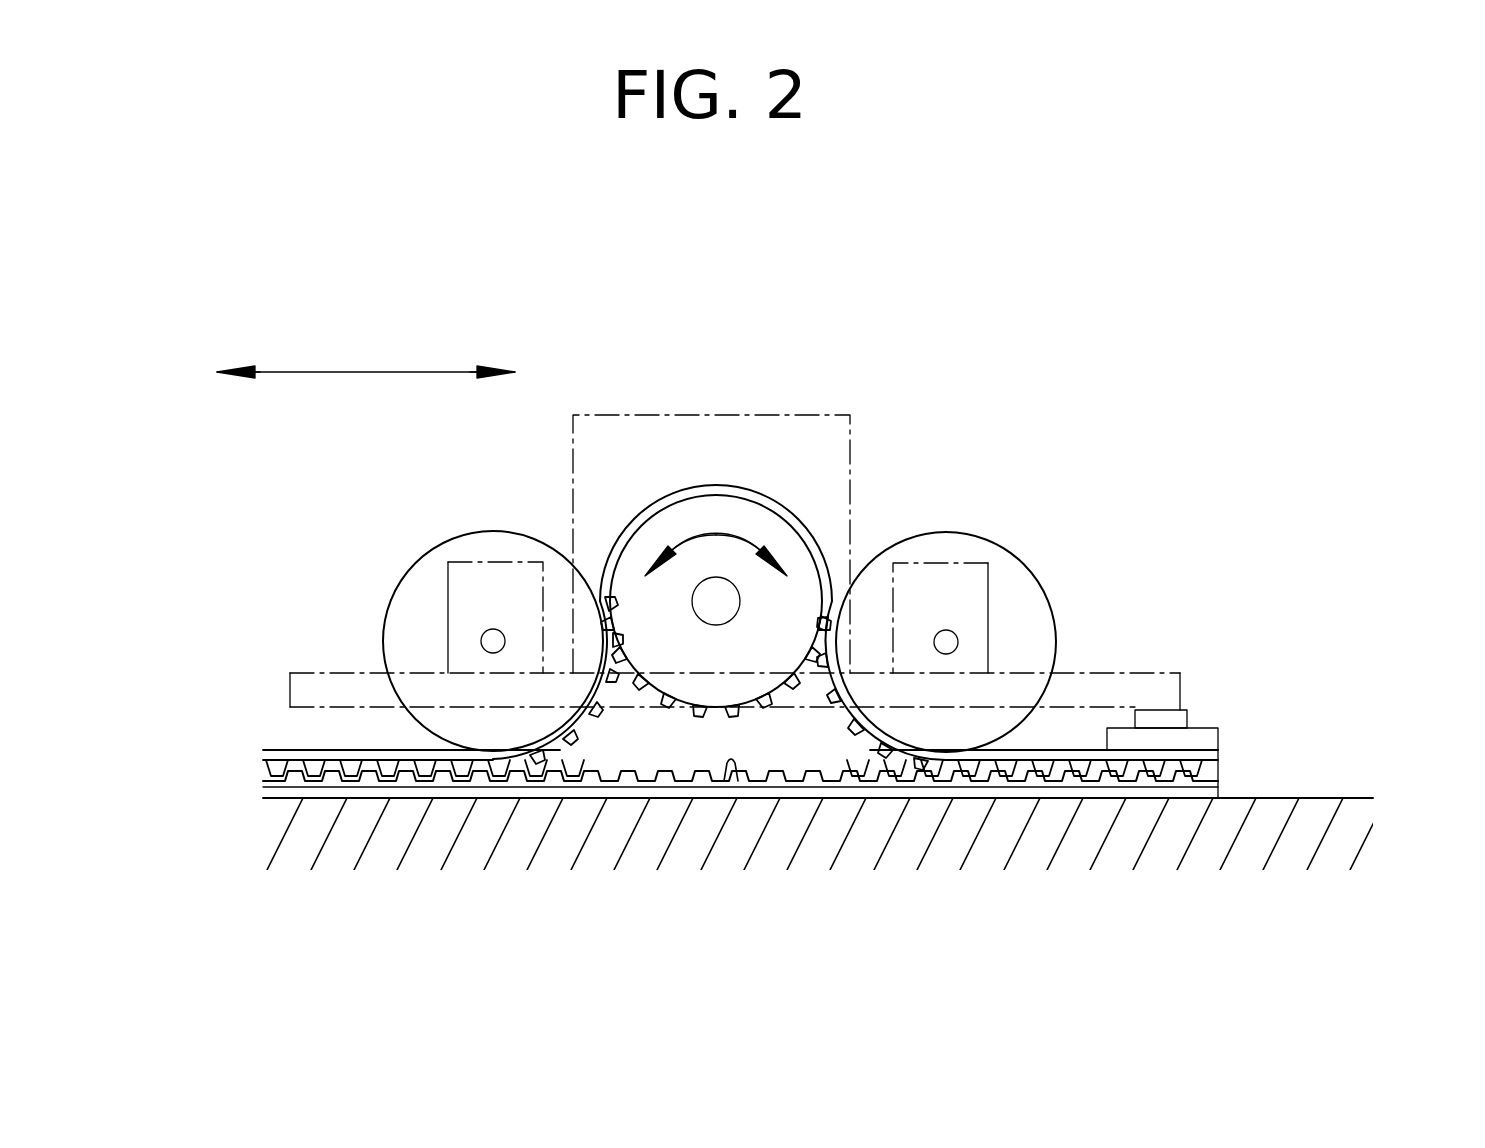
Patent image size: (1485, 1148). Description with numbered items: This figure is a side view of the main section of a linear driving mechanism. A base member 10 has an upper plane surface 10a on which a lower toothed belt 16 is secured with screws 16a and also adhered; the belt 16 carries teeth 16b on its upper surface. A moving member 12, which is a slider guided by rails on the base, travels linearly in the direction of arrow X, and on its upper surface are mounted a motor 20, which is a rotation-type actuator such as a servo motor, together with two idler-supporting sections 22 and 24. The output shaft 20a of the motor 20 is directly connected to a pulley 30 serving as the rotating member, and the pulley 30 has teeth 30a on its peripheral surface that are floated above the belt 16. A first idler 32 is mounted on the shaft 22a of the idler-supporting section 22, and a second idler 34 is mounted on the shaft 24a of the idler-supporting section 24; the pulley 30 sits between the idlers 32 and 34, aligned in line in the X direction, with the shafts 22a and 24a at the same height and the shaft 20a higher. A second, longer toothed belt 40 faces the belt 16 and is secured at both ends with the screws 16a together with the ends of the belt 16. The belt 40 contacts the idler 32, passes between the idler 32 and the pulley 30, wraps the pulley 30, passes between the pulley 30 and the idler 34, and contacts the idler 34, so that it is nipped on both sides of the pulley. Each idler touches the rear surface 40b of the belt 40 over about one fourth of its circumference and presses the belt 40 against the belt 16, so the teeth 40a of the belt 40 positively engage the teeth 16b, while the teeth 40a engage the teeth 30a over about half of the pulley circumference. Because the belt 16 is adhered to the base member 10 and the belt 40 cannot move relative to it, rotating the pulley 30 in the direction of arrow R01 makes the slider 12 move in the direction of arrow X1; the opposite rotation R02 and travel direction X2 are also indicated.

The base member 10 is at (1310, 838).
The upper plane surface 10a is at (1333, 800).
The moving member 12 is at (1180, 688).
The toothed belt 16 is at (490, 798).
The screws 16a is at (1188, 723).
The teeth 16b is at (735, 782).
The motor 20 is at (850, 415).
The output shaft 20a is at (731, 582).
The idler-supporting section 22 is at (410, 560).
The shaft 22a is at (481, 641).
The idler-supporting section 24 is at (990, 590).
The shaft 24a is at (958, 640).
The pulley 30 is at (711, 503).
The teeth 30a is at (797, 705).
The first idler 32 is at (447, 588).
The second idler 34 is at (941, 533).
The toothed belt 40 is at (1010, 762).
The teeth 40a is at (613, 720).
The rear surface 40b is at (330, 762).
The direction of arrow X is at (362, 372).
The direction of arrow X1 is at (492, 347).
The reverse travel direction X2 is at (232, 347).
The direction of arrow R01 is at (664, 579).
The second rotation direction R02 is at (767, 579).